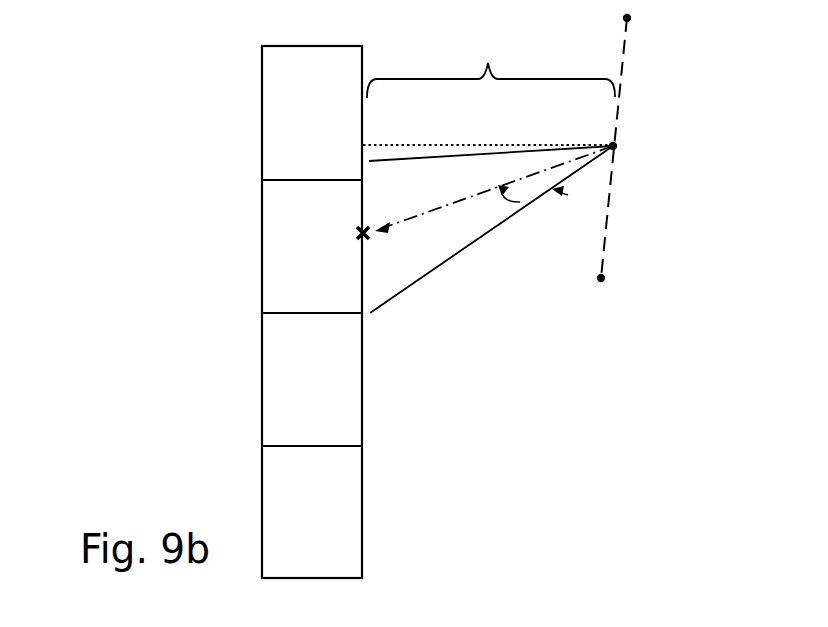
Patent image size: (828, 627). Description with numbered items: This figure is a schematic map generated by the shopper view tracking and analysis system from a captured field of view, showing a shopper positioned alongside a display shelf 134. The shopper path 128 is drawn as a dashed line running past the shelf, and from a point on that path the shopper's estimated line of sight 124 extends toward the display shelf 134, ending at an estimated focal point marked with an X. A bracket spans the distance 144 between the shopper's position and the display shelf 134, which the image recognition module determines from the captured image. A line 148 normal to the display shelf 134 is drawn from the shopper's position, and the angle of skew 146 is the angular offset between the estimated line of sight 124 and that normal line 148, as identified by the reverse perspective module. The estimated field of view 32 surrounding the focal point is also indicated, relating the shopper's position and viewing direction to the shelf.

The display shelf 134 is at (363, 446).
The shopper path 128 is at (626, 55).
The distance 144 is at (491, 69).
The angle of skew 146 is at (488, 138).
The estimated field of view 32 is at (527, 139).
The line normal to the display shelf 148 is at (393, 143).
The estimated line of sight 124 is at (456, 199).